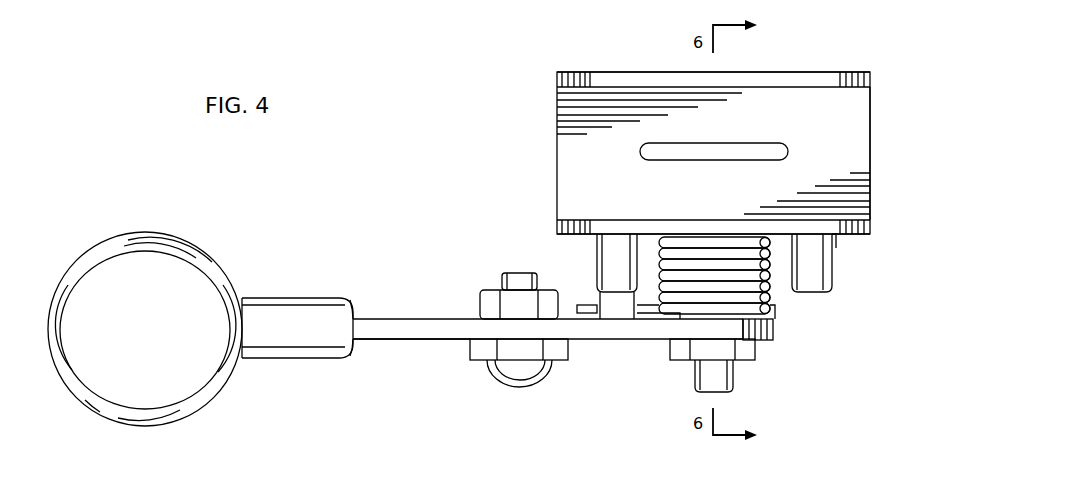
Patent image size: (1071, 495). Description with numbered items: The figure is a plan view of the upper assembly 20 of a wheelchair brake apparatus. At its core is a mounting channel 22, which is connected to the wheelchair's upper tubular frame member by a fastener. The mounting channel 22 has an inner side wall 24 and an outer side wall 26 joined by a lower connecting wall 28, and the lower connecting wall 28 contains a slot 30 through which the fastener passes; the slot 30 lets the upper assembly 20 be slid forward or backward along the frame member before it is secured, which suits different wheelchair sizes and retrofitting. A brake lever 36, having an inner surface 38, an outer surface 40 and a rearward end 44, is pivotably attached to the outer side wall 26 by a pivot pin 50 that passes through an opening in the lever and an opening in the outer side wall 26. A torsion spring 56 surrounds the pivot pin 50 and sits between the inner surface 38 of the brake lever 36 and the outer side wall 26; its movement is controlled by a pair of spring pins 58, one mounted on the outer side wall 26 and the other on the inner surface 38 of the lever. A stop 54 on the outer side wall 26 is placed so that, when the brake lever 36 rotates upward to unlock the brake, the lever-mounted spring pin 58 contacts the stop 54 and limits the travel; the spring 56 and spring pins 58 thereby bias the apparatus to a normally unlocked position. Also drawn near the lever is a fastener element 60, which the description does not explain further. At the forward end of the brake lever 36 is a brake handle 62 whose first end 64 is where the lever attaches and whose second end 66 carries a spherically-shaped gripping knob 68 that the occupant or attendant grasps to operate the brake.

The upper assembly 20 is at (393, 161).
The mounting channel 22 is at (557, 120).
The inner side wall 24 is at (602, 72).
The outer side wall 26 is at (830, 232).
The lower connecting wall 28 is at (852, 145).
The slot 30 is at (722, 143).
The brake lever 36 is at (414, 336).
The inner surface 38 is at (422, 318).
The outer surface 40 is at (445, 340).
The rearward end 44 is at (775, 328).
The pivot pin 50 is at (718, 390).
The stop 54 is at (595, 260).
The torsion spring 56 is at (767, 298).
The spring pins 58 is at (828, 290).
The bolt 60 is at (503, 282).
The brake handle 62 is at (268, 307).
The first end 64 is at (350, 353).
The second end 66 is at (242, 350).
The gripping knob 68 is at (153, 232).